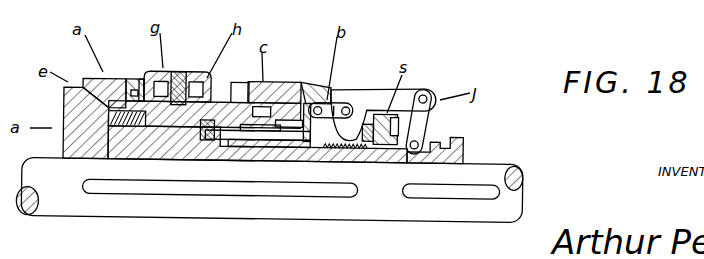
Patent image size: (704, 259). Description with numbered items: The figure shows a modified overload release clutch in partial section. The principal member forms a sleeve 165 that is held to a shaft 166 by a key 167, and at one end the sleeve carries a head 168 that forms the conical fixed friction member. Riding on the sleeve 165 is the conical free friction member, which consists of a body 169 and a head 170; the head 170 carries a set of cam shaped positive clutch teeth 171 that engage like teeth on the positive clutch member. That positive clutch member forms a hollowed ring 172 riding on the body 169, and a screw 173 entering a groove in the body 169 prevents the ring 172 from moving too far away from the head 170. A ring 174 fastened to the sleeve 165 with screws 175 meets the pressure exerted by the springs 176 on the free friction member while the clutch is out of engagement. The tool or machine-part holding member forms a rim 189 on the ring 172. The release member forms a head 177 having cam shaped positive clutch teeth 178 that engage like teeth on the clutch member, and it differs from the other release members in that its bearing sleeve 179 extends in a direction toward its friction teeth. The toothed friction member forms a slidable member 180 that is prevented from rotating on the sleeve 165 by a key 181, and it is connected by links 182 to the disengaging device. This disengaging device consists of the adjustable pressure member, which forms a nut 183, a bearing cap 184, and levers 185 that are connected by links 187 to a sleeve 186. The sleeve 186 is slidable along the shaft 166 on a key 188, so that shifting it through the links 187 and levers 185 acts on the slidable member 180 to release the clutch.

The sleeve 165 is at (120, 149).
The shaft 166 is at (425, 215).
The key 167 is at (348, 188).
The head 168 is at (88, 110).
The body 169 is at (132, 80).
The head 170 is at (90, 72).
The positive clutch teeth 171 is at (138, 80).
The hollowed ring 172 is at (157, 85).
The screw 173 is at (177, 70).
The ring 174 is at (213, 120).
The screws 175 is at (203, 127).
The springs 176 is at (107, 110).
The head 177 is at (270, 82).
The positive clutch teeth 178 is at (230, 84).
The bearing sleeve 179 is at (255, 128).
The slidable member 180 is at (307, 84).
The key 181 is at (278, 132).
The links 182 is at (340, 95).
The nut 183 is at (395, 115).
The bearing cap 184 is at (368, 120).
The levers 185 is at (432, 95).
The sleeve 186 is at (462, 153).
The links 187 is at (422, 118).
The key 188 is at (473, 198).
The rim 189 is at (198, 78).